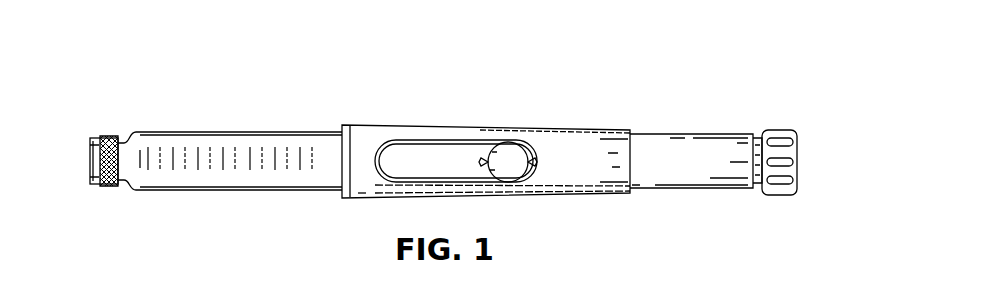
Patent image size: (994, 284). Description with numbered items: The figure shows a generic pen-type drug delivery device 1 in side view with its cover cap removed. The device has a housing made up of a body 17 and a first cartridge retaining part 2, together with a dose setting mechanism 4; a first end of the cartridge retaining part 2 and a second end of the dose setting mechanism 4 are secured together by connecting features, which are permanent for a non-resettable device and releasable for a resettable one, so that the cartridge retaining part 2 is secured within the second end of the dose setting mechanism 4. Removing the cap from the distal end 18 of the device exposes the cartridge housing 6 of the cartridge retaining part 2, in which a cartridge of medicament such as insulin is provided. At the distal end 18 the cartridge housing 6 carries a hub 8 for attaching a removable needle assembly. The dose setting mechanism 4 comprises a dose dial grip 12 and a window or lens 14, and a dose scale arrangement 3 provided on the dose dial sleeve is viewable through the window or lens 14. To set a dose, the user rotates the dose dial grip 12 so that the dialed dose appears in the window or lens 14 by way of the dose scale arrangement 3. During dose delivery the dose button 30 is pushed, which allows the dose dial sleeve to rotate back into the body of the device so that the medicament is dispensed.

The drug delivery device 1 is at (468, 72).
The cartridge retaining part 2 is at (218, 118).
The dose scale arrangement 3 is at (688, 134).
The dose setting mechanism 4 is at (545, 100).
The cartridge housing 6 is at (243, 192).
The hub 8 is at (105, 137).
The dose dial grip 12 is at (776, 129).
The window or lens 14 is at (513, 183).
The body 17 is at (605, 136).
The distal end 18 is at (68, 181).
The dose button 30 is at (798, 150).